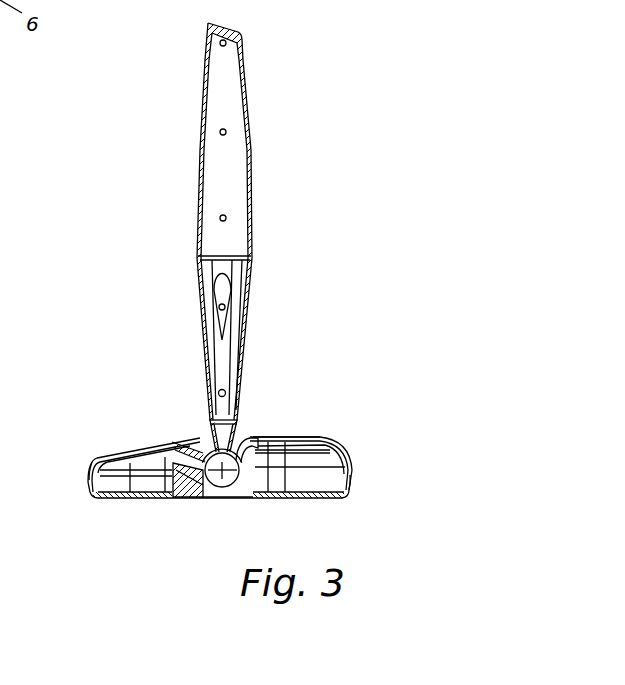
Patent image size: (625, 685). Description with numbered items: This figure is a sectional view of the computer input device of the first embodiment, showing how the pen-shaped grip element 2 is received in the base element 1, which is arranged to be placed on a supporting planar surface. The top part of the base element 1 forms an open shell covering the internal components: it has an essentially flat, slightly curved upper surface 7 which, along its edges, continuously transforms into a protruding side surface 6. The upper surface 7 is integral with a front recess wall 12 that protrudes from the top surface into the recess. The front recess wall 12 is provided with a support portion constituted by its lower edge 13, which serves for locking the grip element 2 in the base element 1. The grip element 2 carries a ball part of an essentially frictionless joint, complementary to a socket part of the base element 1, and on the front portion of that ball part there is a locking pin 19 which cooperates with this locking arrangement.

The base element 1 is at (128, 450).
The grip element 2 is at (215, 200).
The side surface 6 is at (92, 462).
The upper surface 7 is at (292, 436).
The front recess wall 12 is at (196, 443).
The lower edge 13 is at (187, 500).
The locking pin 19 is at (205, 497).